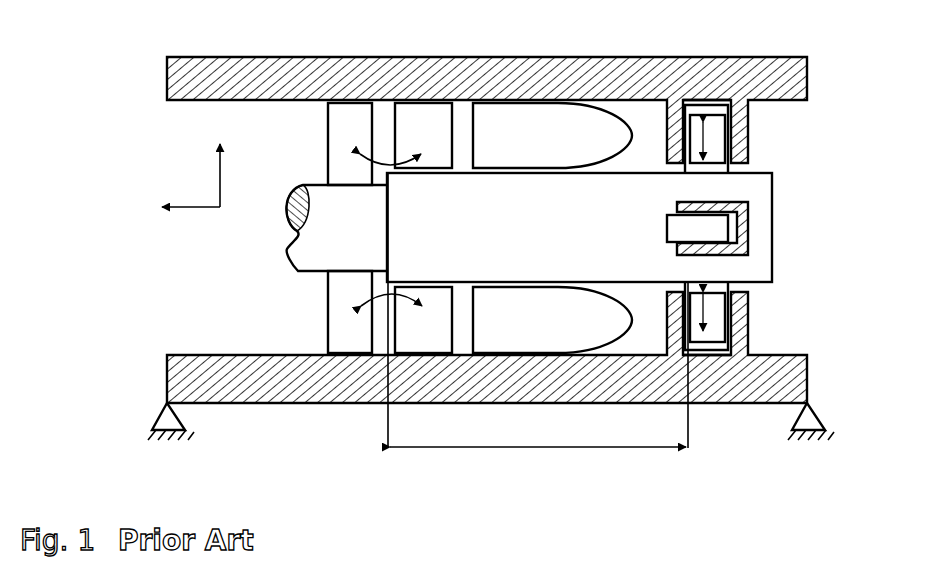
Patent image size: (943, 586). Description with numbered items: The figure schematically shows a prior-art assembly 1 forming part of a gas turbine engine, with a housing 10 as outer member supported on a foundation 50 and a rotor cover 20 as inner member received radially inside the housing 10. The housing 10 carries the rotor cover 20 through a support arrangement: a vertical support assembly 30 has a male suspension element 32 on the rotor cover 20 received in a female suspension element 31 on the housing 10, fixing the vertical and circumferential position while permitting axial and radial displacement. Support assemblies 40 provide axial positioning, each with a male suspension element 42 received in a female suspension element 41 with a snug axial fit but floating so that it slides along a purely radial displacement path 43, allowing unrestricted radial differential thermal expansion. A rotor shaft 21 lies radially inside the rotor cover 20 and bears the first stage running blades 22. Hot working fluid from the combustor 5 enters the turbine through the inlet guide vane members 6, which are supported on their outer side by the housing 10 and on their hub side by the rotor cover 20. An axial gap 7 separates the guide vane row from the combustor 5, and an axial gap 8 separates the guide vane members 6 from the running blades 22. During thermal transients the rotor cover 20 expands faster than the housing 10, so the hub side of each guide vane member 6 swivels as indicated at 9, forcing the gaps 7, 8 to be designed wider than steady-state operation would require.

The assembly 1 is at (281, 430).
The combustor 5 is at (524, 146).
The inlet guide vane members 6 is at (415, 141).
The axial gap 7 is at (462, 113).
The axial gap 8 is at (383, 116).
The swiveling displacement 9 is at (405, 158).
The housing 10 is at (675, 54).
The rotor cover 20 is at (762, 182).
The rotor shaft 21 is at (285, 248).
The first stage running blades 22 is at (337, 143).
The vertical support assembly 30 is at (747, 228).
The female suspension element 31 is at (752, 207).
The male suspension element 32 is at (714, 233).
The support assemblies 40 is at (766, 233).
The female suspension element 41 is at (750, 136).
The male suspension element 42 is at (714, 147).
The displacement path 43 is at (752, 72).
The foundation 50 is at (166, 444).